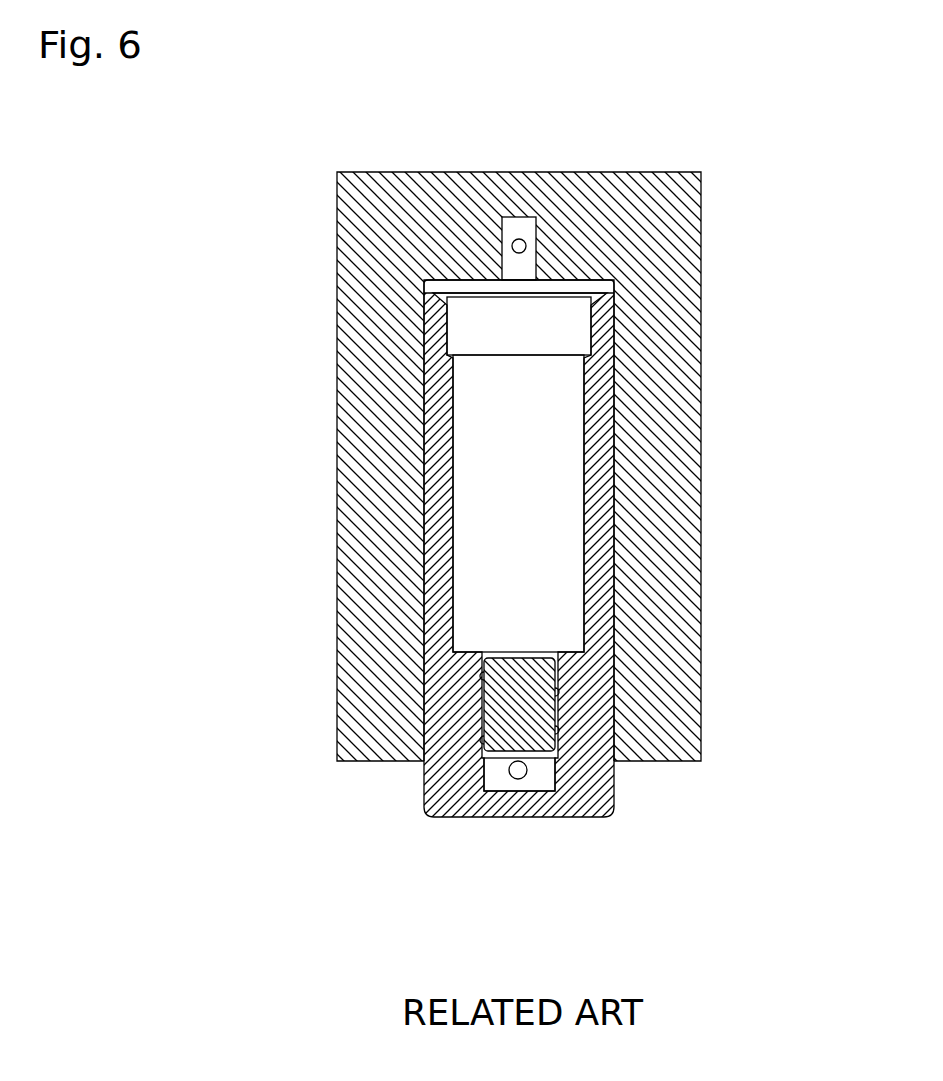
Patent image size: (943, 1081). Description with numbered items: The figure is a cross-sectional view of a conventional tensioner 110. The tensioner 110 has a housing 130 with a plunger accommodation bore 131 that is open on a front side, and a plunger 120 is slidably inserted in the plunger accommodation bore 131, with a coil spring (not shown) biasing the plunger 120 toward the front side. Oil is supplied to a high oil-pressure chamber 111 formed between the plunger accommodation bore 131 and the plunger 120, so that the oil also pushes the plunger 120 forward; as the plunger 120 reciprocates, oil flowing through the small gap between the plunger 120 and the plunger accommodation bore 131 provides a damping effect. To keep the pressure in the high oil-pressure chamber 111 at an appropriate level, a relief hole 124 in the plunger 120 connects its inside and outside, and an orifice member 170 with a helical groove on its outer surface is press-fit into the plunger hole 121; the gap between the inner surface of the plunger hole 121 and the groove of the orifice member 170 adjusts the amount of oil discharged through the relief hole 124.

The tensioner 110 is at (205, 222).
The high oil-pressure chamber 111 is at (541, 520).
The plunger 120 is at (422, 792).
The plunger hole 121 is at (465, 590).
The relief hole 124 is at (518, 770).
The housing 130 is at (662, 361).
The plunger accommodation bore 131 is at (611, 458).
The orifice member 170 is at (520, 693).